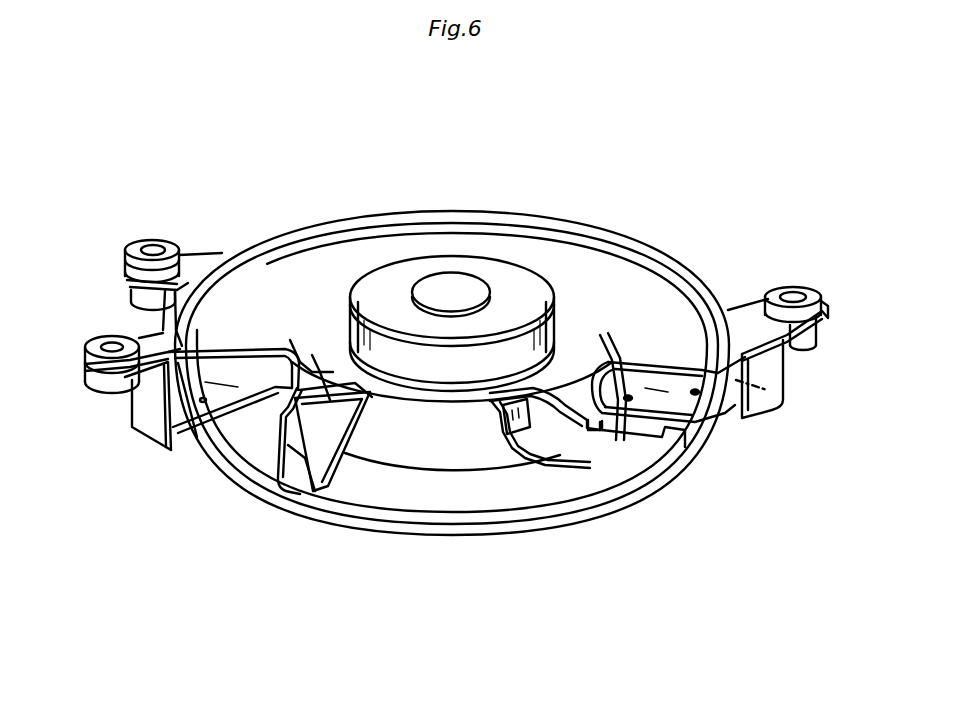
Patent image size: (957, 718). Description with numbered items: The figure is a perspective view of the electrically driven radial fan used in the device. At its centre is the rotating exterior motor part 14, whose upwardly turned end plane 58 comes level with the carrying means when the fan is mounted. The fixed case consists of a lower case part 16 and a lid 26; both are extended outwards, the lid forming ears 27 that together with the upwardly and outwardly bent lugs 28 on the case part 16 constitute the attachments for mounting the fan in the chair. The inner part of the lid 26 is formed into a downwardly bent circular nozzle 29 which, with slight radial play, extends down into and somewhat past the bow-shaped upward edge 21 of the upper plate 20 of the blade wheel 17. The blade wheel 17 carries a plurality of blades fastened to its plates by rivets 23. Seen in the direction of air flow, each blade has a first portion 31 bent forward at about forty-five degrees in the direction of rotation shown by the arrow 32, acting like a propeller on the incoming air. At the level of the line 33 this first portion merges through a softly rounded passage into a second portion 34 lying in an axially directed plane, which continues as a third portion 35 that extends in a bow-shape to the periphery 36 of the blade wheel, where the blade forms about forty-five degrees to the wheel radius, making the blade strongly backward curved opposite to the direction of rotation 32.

The motor part 14 is at (443, 442).
The lower part of the case 16 is at (240, 470).
The blade wheel 17 is at (596, 482).
The upper plate 20 is at (727, 445).
The circular edge 21 is at (272, 418).
The rivets 23 is at (663, 440).
The lid 26 is at (560, 253).
The ears 27 is at (747, 318).
The lugs 28 is at (150, 415).
The nozzle 29 is at (300, 400).
The first blade portion 31 is at (325, 360).
The arrow of direction of rotation 32 is at (482, 163).
The line 33 is at (327, 363).
The second blade portion 34 is at (338, 375).
The third blade portion 35 is at (322, 440).
The periphery of the blade wheel 36 is at (305, 458).
The end plane of the motor cover 58 is at (503, 283).